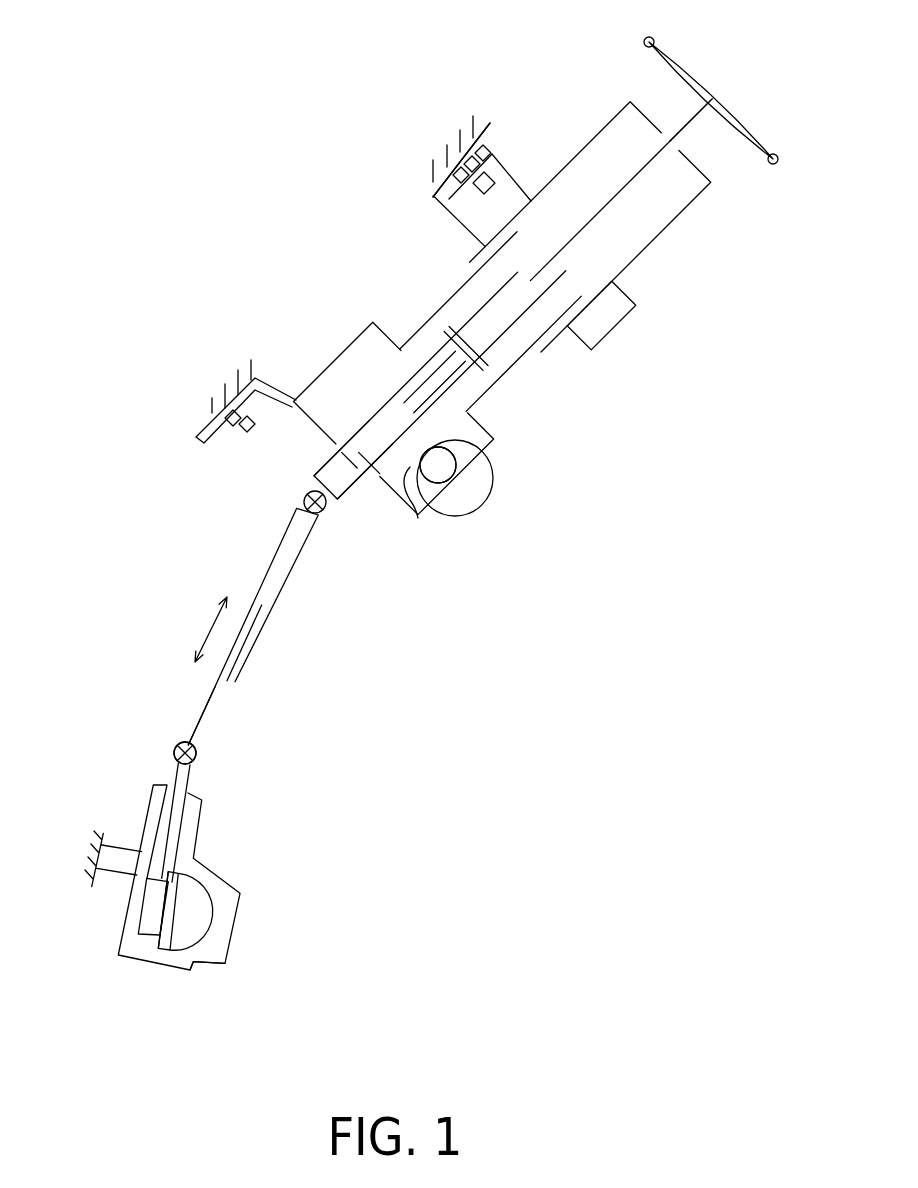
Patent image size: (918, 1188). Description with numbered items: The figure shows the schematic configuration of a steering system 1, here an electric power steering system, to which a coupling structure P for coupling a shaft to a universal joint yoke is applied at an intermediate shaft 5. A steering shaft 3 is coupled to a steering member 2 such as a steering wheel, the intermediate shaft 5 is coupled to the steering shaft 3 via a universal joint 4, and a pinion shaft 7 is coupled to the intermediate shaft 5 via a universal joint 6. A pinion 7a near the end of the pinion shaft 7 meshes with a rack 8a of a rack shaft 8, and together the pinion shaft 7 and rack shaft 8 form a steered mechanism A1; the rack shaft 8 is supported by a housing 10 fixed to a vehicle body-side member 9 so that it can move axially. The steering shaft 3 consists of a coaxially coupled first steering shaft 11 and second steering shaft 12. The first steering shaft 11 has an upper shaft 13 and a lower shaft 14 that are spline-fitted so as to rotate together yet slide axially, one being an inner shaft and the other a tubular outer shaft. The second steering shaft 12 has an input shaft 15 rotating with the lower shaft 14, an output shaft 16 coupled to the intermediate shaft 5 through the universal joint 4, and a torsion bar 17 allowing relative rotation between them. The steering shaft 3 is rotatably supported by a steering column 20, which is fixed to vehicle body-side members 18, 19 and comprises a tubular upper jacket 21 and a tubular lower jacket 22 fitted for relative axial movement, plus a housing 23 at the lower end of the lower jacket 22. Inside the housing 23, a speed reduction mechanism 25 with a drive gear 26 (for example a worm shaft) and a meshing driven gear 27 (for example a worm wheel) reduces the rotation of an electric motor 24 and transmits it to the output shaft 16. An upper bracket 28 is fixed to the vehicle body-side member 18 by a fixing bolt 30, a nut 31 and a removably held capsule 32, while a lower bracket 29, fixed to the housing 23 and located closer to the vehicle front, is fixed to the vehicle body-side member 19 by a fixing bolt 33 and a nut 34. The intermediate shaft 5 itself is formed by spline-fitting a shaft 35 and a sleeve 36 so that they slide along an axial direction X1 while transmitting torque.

The steering system 1 is at (713, 80).
The steering member 2 is at (735, 118).
The steering shaft 3 is at (681, 127).
The universal joint 4 is at (302, 498).
The intermediate shaft 5 is at (270, 620).
The universal joint 6 is at (174, 753).
The pinion shaft 7 is at (188, 770).
The pinion 7a is at (148, 905).
The rack shaft 8 is at (218, 910).
The rack 8a is at (153, 930).
The vehicle body-side member 9 is at (95, 848).
The housing 10 is at (150, 802).
The first steering shaft 11 is at (624, 186).
The second steering shaft 12 is at (353, 432).
The upper shaft 13 is at (610, 200).
The lower shaft 14 is at (467, 317).
The input shaft 15 is at (480, 400).
The output shaft 16 is at (352, 490).
The torsion bar 17 is at (398, 350).
The vehicle body-side member 18 is at (433, 170).
The vehicle body-side member 19 is at (197, 412).
The steering column 20 is at (688, 208).
The upper jacket 21 is at (563, 335).
The lower jacket 22 is at (521, 358).
The housing 23 is at (362, 335).
The electric motor 24 is at (488, 502).
The speed reduction mechanism 25 is at (463, 462).
The drive gear 26 is at (445, 470).
The driven gear 27 is at (418, 518).
The upper bracket 28 is at (462, 218).
The lower bracket 29 is at (277, 373).
The fixing bolt 30 is at (497, 180).
The nut 31 is at (492, 160).
The capsule 32 is at (476, 133).
The fixing bolt 33 is at (248, 428).
The nut 34 is at (228, 428).
The shaft 35 is at (215, 700).
The sleeve 36 is at (248, 657).
The coupling structure P is at (200, 753).
The axial direction X1 is at (208, 627).
The steered mechanism A1 is at (203, 950).